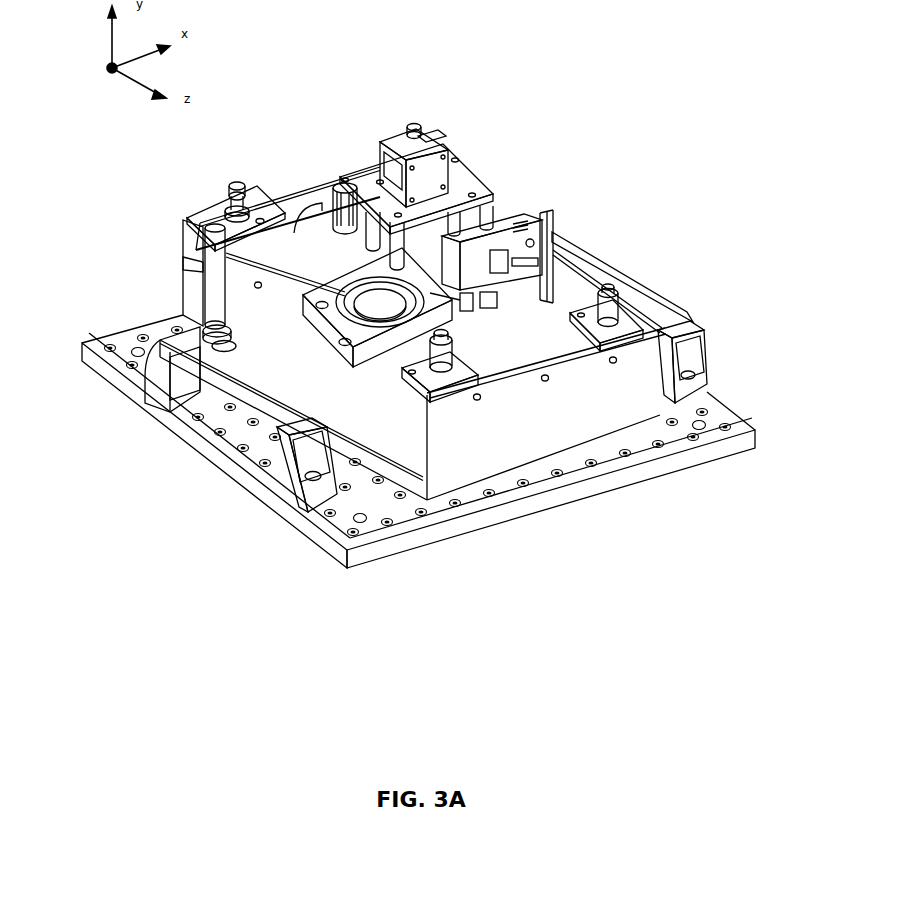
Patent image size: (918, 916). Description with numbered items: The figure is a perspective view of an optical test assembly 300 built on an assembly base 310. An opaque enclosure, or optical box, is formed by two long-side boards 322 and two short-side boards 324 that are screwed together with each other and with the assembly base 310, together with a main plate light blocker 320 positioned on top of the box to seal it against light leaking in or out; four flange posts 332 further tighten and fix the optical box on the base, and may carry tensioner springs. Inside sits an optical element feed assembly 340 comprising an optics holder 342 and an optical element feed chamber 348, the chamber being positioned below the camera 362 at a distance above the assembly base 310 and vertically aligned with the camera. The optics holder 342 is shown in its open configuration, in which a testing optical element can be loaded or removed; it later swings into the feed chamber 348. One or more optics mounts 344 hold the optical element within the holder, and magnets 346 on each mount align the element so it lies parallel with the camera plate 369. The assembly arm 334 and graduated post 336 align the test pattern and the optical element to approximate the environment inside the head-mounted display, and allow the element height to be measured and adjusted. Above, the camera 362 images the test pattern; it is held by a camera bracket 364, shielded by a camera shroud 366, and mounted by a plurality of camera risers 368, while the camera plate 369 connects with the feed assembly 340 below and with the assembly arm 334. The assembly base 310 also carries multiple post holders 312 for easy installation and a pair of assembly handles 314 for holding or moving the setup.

The optical test assembly 300 is at (680, 64).
The assembly base 310 is at (540, 478).
The post holder 312 is at (657, 460).
The assembly handle 314 is at (264, 421).
The main plate light blocker 320 is at (585, 288).
The long-side board 322 is at (383, 456).
The short-side board 324 is at (453, 470).
The flange post 332 is at (650, 320).
The assembly arm 334 is at (177, 262).
The graduated post 336 is at (199, 305).
The optical element feed assembly 340 is at (447, 388).
The optics holder 342 is at (352, 370).
The optics mount 344 is at (455, 352).
The magnet 346 is at (340, 268).
The optical element feed chamber 348 is at (205, 350).
The camera 362 is at (405, 126).
The camera bracket 364 is at (453, 176).
The camera shroud 366 is at (347, 172).
The camera riser 368 is at (331, 203).
The camera plate 369 is at (275, 201).